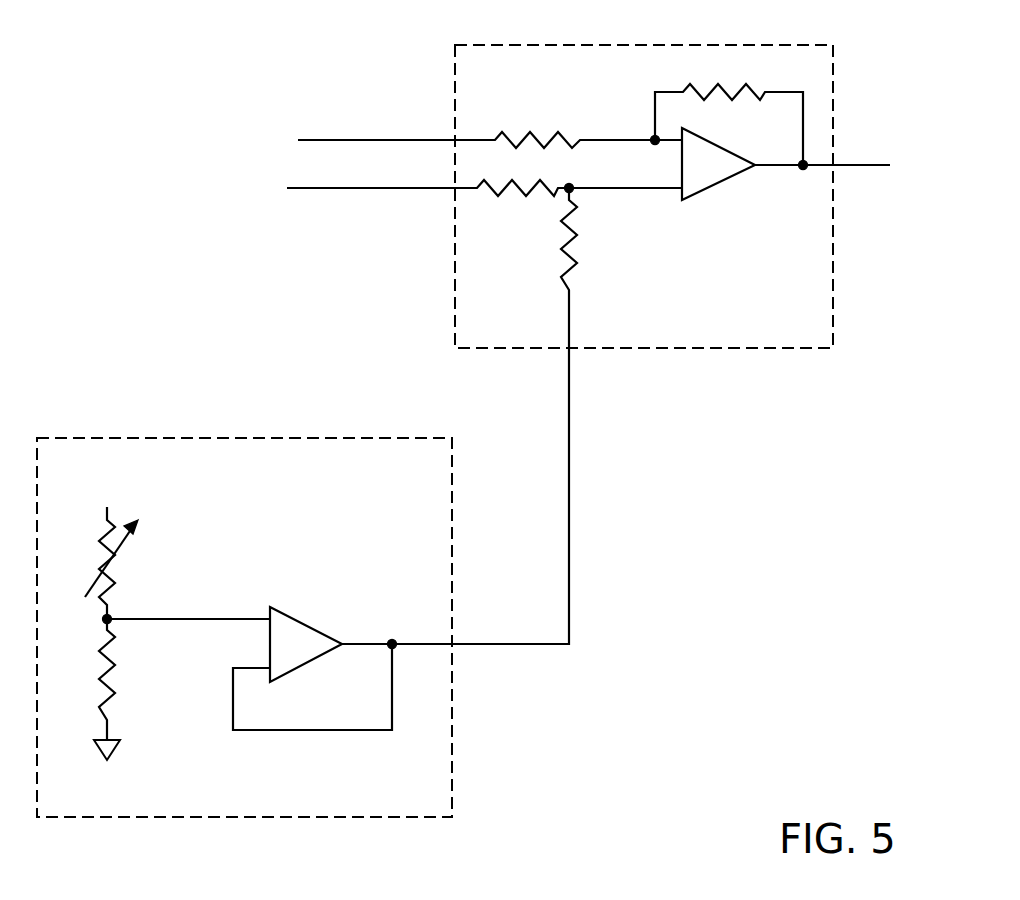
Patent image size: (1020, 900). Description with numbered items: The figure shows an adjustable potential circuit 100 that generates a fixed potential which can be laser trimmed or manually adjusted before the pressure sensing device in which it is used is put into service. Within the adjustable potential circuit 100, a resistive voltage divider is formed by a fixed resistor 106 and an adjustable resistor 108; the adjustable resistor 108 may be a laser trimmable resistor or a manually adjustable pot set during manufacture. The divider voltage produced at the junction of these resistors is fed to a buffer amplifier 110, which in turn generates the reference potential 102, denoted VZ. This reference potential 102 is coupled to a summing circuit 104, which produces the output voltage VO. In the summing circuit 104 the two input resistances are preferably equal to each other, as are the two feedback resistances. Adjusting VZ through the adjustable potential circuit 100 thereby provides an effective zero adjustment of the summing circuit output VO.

The adjustable potential circuit 100 is at (244, 598).
The reference potential 102 is at (490, 644).
The summing circuit 104 is at (607, 348).
The fixed resistor 106 is at (113, 668).
The adjustable resistor 108 is at (110, 558).
The buffer amplifier 110 is at (295, 615).